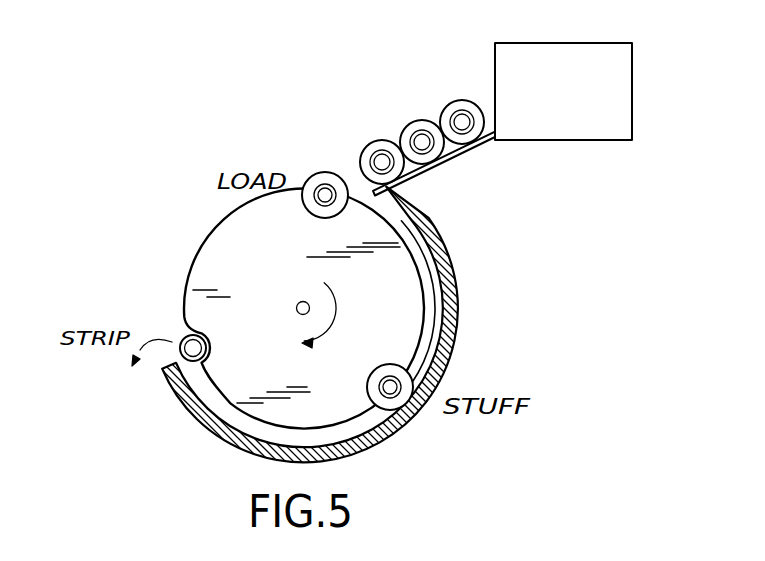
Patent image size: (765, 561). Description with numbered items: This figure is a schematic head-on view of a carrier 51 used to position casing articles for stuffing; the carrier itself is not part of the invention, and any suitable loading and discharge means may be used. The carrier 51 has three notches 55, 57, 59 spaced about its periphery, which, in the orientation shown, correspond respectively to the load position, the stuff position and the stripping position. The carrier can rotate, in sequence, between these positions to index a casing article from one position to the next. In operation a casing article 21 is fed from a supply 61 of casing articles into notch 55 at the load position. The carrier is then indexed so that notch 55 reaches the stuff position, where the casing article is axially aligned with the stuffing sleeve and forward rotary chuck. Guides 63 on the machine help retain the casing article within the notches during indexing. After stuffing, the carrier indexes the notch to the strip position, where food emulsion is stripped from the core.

The casing article 21 is at (445, 110).
The carrier 51 is at (203, 245).
The notch 55 is at (307, 210).
The notch 57 is at (368, 385).
The notch 59 is at (184, 338).
The supply 61 is at (572, 43).
The guides 63 is at (460, 315).